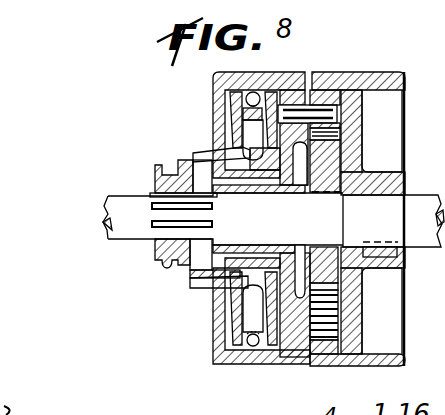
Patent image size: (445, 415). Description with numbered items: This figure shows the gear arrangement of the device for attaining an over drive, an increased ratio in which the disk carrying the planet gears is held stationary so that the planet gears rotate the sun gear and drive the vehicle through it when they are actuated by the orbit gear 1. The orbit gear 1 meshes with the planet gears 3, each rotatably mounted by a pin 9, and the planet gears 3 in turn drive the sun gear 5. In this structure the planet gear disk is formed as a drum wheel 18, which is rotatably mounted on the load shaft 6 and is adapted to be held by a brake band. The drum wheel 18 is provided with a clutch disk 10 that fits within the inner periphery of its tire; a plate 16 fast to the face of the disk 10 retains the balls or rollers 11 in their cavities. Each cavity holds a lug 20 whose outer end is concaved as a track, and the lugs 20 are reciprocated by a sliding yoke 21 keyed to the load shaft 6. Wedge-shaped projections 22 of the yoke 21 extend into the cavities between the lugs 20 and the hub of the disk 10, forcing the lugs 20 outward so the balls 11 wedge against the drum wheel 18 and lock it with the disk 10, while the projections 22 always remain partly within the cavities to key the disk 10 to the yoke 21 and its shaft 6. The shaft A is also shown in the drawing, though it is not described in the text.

The orbit gear 1 is at (368, 78).
The planet gear 3 is at (313, 96).
The sun gear 5 is at (318, 193).
The load shaft 6 is at (223, 219).
The pin 9 is at (338, 114).
The clutch disk 10 is at (293, 362).
The balls or rollers 11 is at (249, 89).
The plate 16 is at (232, 110).
The drum wheel 18 is at (288, 72).
The lug 20 is at (247, 133).
The sliding yoke 21 is at (156, 258).
The projections of the yoke 22 is at (195, 152).
The driven shaft A is at (393, 221).